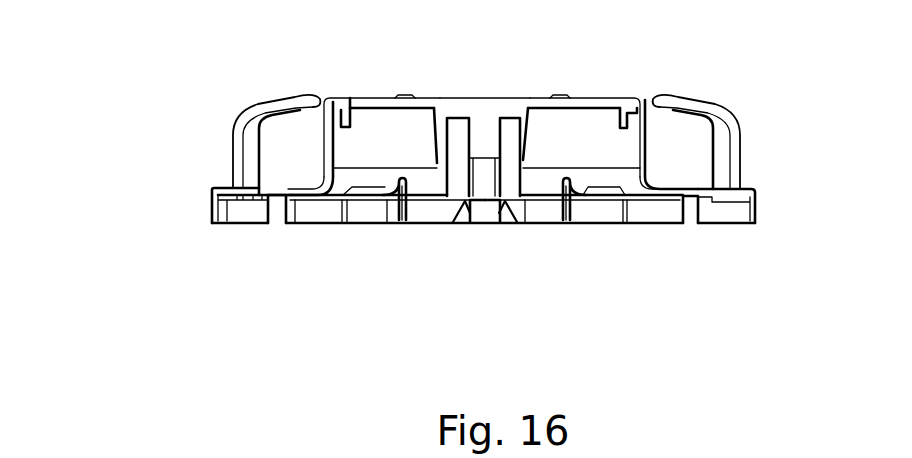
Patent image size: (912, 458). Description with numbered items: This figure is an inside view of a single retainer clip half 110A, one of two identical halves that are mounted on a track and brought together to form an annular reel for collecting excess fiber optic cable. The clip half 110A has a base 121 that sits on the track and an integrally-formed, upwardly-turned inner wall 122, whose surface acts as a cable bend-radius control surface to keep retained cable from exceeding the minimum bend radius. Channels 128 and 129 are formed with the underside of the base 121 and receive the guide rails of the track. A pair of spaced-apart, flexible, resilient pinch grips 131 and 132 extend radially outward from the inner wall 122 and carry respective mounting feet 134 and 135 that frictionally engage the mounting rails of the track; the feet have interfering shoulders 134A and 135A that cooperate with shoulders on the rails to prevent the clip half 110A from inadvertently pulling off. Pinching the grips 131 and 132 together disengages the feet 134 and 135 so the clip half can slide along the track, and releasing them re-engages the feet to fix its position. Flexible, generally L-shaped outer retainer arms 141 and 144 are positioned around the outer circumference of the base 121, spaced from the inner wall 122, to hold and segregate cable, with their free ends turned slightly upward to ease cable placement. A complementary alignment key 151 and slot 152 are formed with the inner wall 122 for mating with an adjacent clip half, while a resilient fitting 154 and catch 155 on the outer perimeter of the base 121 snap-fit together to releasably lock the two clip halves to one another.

The retainer clip half 110A is at (195, 113).
The base 121 is at (258, 187).
The inner wall 122 is at (485, 122).
The channel 128 is at (689, 216).
The channel 129 is at (278, 216).
The pinch grip 131 is at (512, 142).
The pinch grip 132 is at (458, 140).
The mounting foot 134 is at (498, 223).
The interfering shoulder 134A is at (510, 212).
The mounting foot 135 is at (483, 223).
The interfering shoulder 135A is at (457, 208).
The outer retainer arm 141 is at (290, 108).
The outer retainer arm 144 is at (733, 124).
The alignment key 151 is at (622, 122).
The slot 152 is at (342, 102).
The resilient fitting 154 is at (226, 224).
The catch 155 is at (755, 224).